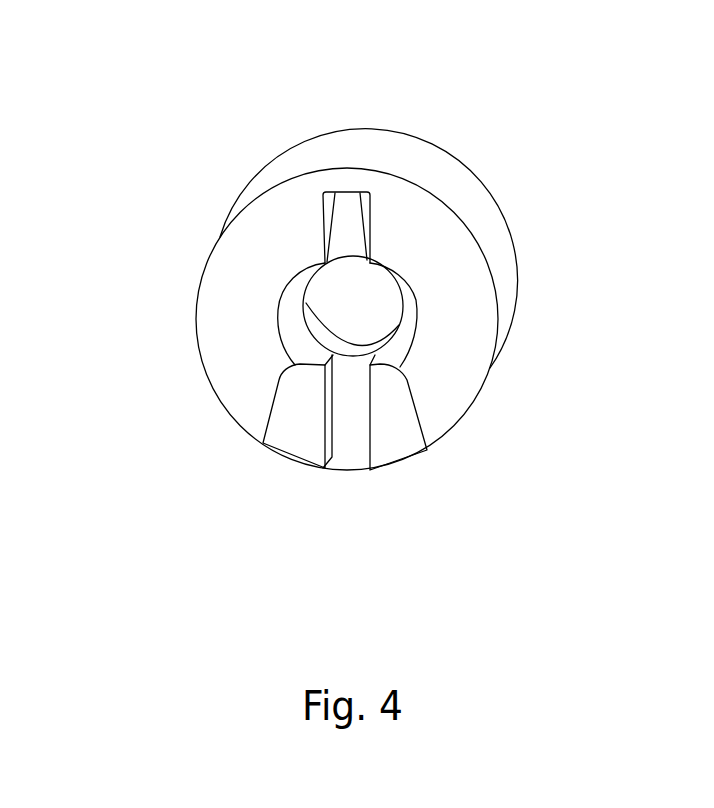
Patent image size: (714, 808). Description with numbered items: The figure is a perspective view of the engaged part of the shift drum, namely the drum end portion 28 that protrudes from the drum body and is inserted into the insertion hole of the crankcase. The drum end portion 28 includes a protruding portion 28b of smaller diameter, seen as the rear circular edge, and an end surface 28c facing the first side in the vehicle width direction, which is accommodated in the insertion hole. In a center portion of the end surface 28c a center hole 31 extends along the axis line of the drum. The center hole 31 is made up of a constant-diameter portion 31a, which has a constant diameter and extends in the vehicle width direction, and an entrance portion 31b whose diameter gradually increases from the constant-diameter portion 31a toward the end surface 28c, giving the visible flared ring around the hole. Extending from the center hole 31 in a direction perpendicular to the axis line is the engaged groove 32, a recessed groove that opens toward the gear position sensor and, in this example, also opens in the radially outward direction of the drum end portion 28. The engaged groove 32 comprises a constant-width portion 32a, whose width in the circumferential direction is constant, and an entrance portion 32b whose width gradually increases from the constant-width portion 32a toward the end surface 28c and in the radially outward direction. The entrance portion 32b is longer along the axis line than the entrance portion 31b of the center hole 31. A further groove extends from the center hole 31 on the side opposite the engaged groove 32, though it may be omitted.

The drum end portion 28 is at (350, 243).
The protruding portion 28b is at (358, 143).
The end surface 28c is at (230, 384).
The center hole 31 is at (222, 279).
The constant-diameter portion 31a is at (300, 313).
The entrance portion 31b is at (285, 343).
The engaged groove 32 is at (337, 492).
The constant-width portion 32a is at (333, 422).
The entrance portion 32b is at (294, 435).